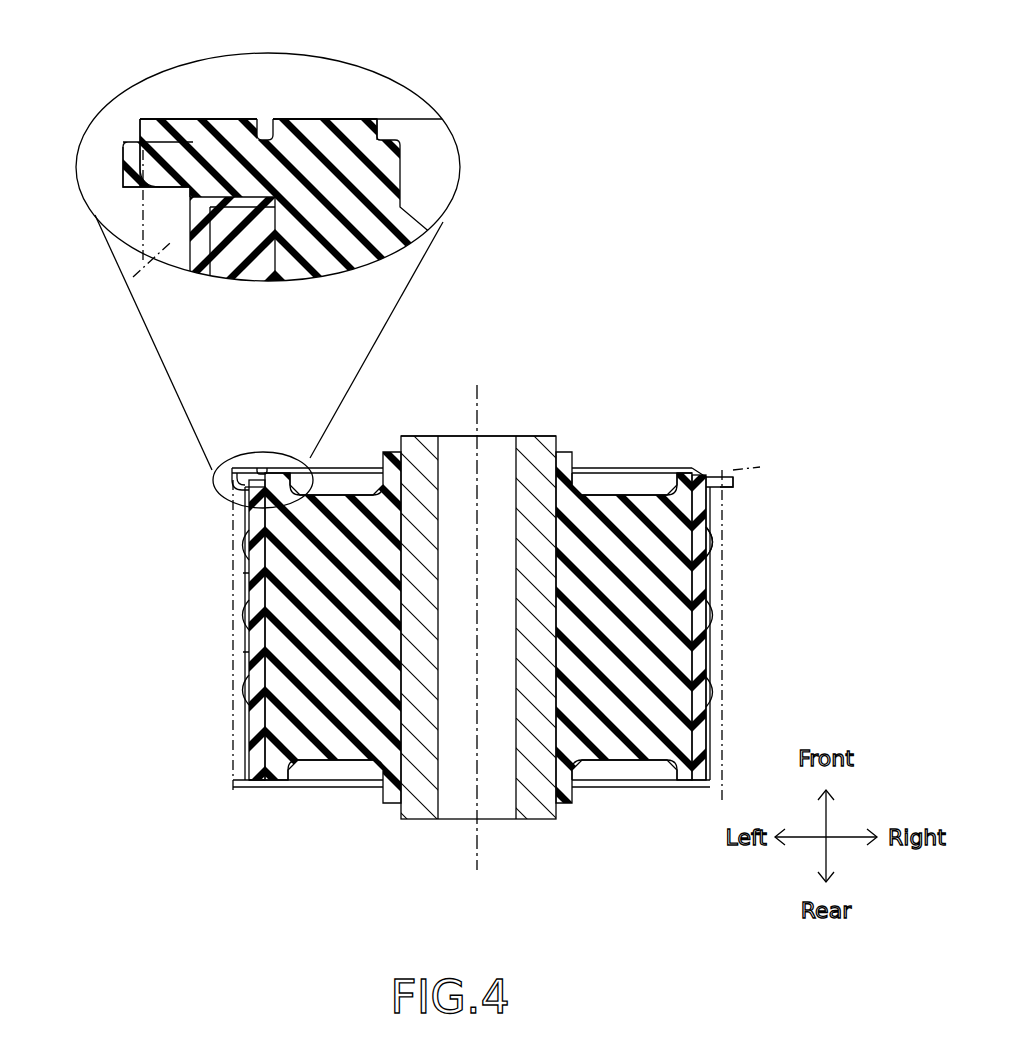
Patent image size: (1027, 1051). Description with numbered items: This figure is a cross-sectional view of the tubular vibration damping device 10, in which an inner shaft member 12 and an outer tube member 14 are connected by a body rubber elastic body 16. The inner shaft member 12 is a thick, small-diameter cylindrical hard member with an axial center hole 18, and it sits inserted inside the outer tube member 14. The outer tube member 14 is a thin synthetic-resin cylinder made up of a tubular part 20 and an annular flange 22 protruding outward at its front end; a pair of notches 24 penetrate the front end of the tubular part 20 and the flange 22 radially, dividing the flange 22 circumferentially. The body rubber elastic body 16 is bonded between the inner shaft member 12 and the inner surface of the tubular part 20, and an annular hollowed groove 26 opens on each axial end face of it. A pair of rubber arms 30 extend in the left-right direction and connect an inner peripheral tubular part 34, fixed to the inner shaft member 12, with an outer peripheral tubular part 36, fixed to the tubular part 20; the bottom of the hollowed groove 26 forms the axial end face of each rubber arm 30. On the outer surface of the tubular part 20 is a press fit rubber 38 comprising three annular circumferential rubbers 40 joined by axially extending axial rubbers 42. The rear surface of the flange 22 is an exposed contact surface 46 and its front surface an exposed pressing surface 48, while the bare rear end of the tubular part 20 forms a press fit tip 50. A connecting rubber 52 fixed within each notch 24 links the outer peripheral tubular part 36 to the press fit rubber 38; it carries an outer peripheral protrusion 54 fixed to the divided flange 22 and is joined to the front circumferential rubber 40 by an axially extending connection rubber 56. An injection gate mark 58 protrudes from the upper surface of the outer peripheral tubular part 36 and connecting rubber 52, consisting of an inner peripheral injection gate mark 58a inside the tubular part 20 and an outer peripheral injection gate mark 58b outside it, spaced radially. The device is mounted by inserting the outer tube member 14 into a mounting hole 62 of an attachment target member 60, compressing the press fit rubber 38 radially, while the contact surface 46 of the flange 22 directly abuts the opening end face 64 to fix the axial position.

The tubular vibration damping device 10 is at (735, 405).
The inner shaft member 12 is at (527, 432).
The outer tube member 14 is at (712, 748).
The body rubber elastic body 16 is at (616, 468).
The center hole 18 is at (438, 468).
The tubular part 20 is at (697, 697).
The flange 22 is at (715, 477).
The notch 24 is at (233, 480).
The hollowed groove 26 is at (582, 487).
The rubber arm 30 is at (660, 640).
The inner peripheral tubular part 34 is at (390, 793).
The outer peripheral tubular part 36 is at (678, 772).
The press fit rubber 38 is at (722, 550).
The circumferential rubber 40 is at (243, 543).
The axial rubber 42 is at (243, 573).
The contact surface 46 is at (730, 487).
The pressing surface 48 is at (713, 473).
The press fit tip 50 is at (257, 765).
The connecting rubber 52 is at (262, 466).
The outer peripheral protrusion 54 is at (163, 150).
The connection rubber 56 is at (248, 502).
The injection gate mark 58 is at (362, 113).
The inner peripheral injection gate mark 58a is at (338, 130).
The outer peripheral injection gate mark 58b is at (224, 128).
The attachment target member 60 is at (717, 733).
The mounting hole 62 is at (698, 787).
The opening end face 64 is at (735, 470).